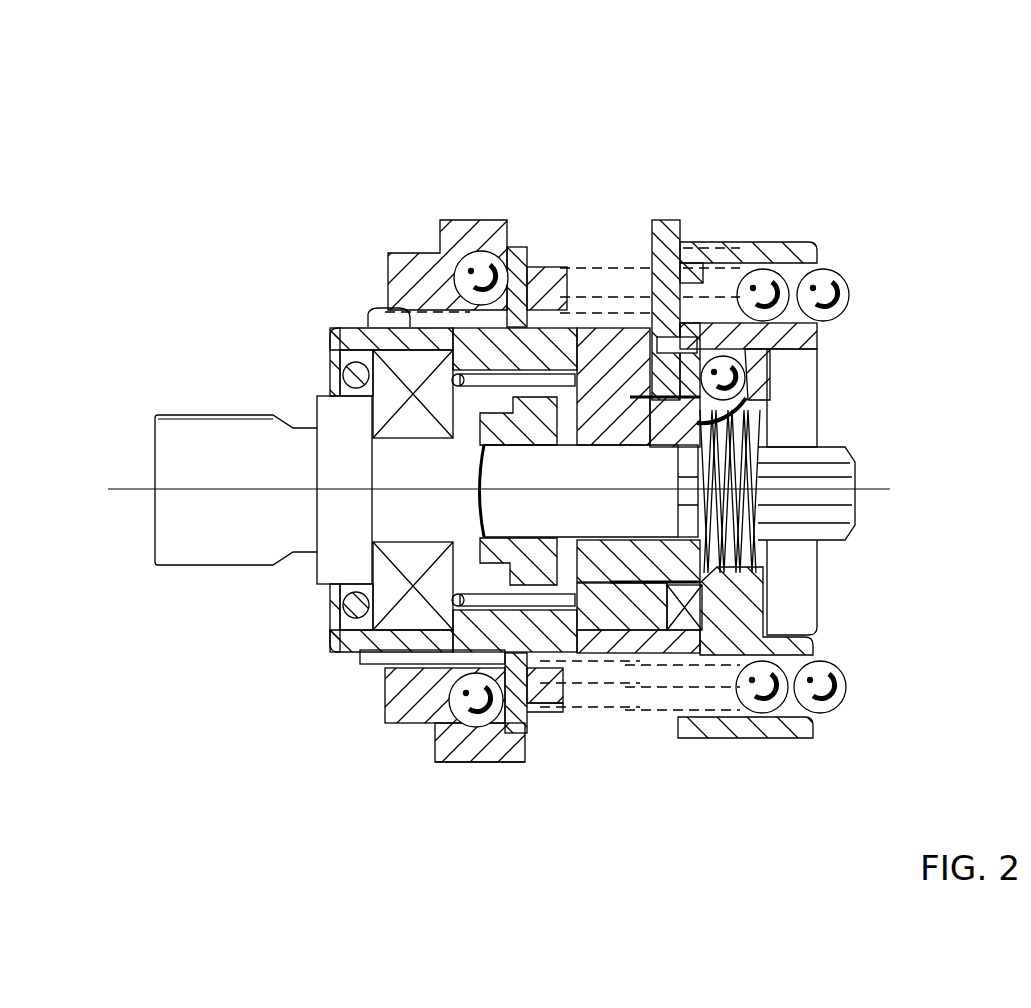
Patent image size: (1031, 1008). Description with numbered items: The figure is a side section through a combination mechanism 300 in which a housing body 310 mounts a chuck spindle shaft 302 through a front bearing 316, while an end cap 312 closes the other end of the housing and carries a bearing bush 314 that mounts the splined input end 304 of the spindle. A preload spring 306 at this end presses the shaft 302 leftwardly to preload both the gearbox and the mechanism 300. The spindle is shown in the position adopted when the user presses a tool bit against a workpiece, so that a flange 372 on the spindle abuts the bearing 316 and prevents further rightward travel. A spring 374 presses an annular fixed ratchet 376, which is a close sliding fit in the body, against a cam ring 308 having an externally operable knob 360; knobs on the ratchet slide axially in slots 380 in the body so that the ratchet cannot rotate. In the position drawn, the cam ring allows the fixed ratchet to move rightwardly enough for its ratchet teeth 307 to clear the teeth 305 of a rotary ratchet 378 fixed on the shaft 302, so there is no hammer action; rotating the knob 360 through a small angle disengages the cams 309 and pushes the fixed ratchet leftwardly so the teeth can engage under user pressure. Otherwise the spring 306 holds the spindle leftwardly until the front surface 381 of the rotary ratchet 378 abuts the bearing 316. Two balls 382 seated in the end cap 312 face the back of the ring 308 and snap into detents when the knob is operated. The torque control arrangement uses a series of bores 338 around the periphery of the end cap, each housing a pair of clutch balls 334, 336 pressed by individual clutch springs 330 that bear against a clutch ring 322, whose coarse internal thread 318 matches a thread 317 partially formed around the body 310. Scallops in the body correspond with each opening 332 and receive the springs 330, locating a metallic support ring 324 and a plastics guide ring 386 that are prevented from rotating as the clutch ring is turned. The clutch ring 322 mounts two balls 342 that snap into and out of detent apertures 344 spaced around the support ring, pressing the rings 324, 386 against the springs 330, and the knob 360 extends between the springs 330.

The mechanism 300 is at (880, 143).
The chuck spindle shaft 302 is at (185, 522).
The input end 304 is at (843, 485).
The ratchet teeth 305 is at (562, 446).
The preload spring 306 is at (770, 435).
The ratchet teeth 307 is at (548, 560).
The cam ring 308 is at (722, 345).
The cams 309 is at (667, 646).
The housing body 310 is at (333, 330).
The end cap 312 is at (820, 250).
The bearing bush 314 is at (753, 552).
The front bearing 316 is at (388, 402).
The thread 317 is at (368, 310).
The coarse internal thread 318 is at (371, 308).
The clutch ring 322 is at (433, 753).
The support ring 324 is at (515, 240).
The clutch springs 330 is at (623, 265).
The opening 332 is at (695, 245).
The clutch ball 334 is at (798, 282).
The clutch ball 336 is at (848, 300).
The bores 338 is at (846, 698).
The balls 342 is at (483, 258).
The detent apertures 344 is at (432, 762).
The knob 360 is at (665, 220).
The flange 372 is at (330, 410).
The spring 374 is at (468, 440).
The fixed ratchet 376 is at (633, 598).
The rotary ratchet 378 is at (342, 598).
The slots 380 is at (566, 612).
The front surface 381 is at (463, 548).
The balls 382 is at (746, 380).
The guide ring 386 is at (540, 265).